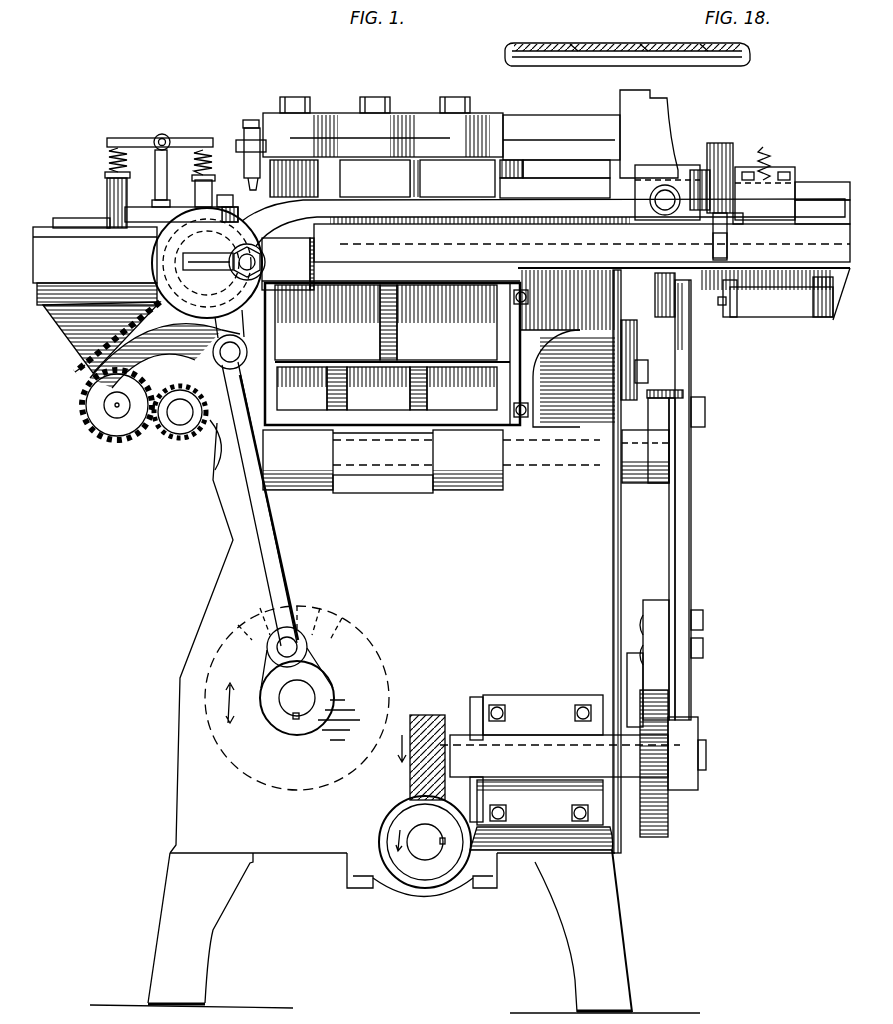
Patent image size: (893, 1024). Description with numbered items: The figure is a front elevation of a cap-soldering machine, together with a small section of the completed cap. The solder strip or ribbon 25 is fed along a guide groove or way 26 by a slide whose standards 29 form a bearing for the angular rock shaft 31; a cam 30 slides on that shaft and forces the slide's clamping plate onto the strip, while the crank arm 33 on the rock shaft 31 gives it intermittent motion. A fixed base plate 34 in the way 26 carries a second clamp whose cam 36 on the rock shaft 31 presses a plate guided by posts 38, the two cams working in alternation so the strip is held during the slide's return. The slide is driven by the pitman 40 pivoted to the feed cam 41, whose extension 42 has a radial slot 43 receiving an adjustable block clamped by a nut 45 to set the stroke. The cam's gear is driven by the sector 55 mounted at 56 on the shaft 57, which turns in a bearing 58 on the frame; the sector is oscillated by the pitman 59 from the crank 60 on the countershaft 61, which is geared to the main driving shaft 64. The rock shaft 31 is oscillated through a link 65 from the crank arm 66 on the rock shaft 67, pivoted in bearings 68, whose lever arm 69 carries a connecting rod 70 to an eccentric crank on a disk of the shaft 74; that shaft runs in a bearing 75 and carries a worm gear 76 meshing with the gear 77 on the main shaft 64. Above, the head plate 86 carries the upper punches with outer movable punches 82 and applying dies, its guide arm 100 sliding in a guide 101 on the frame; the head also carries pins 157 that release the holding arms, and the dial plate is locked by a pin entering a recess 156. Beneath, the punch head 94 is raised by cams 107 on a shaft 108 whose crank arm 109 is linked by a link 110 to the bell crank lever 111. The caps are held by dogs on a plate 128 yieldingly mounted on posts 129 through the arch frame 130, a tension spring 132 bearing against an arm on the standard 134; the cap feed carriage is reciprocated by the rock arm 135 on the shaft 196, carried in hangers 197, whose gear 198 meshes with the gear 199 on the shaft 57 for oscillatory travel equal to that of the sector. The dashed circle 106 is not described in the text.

The solder strip or ribbon 25 is at (33, 227).
The guide groove or way 26 is at (582, 243).
The standards 29 is at (642, 165).
The cam 30 is at (676, 165).
The rock shaft 31 is at (818, 185).
The crank arm 33 is at (725, 160).
The base plate 34 is at (795, 213).
The cam 36 is at (775, 170).
The posts 38 is at (768, 150).
The pitman 40 is at (543, 221).
The feed cam 41 is at (207, 273).
The extension 42 is at (274, 263).
The slot 43 is at (262, 270).
The nut 45 is at (234, 275).
The sector 55 is at (70, 365).
The sector mounting 56 is at (178, 440).
The shaft 57 is at (172, 418).
The bearing 58 is at (222, 440).
The pitman 59 is at (272, 522).
The crank 60 is at (305, 662).
The countershaft 61 is at (310, 690).
The main driving shaft 64 is at (428, 860).
The link 65 is at (733, 220).
The crank arm 66 is at (730, 252).
The rock shaft 67 is at (770, 300).
The bearings 68 is at (822, 317).
The lever arm 69 is at (706, 315).
The connecting rod 70 is at (691, 482).
The shaft 74 is at (573, 763).
The bearing 75 is at (547, 697).
The worm gear 76 is at (428, 715).
The gear 77 is at (380, 828).
The outer movable punch 82 is at (440, 179).
The head plate 86 is at (405, 120).
The punch head 94 is at (387, 388).
The guide arm 100 is at (575, 115).
The guide 101 is at (672, 110).
The path circle 106 is at (250, 630).
The cams 107 is at (333, 484).
The shaft 108 is at (431, 460).
The crank arm 109 is at (665, 395).
The link 110 is at (670, 520).
The bell crank lever 111 is at (658, 605).
The plate 128 is at (88, 215).
The posts 129 is at (107, 176).
The arch frame 130 is at (205, 210).
The tension spring 132 is at (108, 155).
The standard 134 is at (165, 160).
The rock arm 135 is at (143, 137).
The recess 156 is at (242, 135).
The pins 157 is at (256, 120).
The shaft 196 is at (110, 412).
The hangers 197 is at (160, 350).
The gear 198 is at (82, 406).
The gear 199 is at (205, 440).